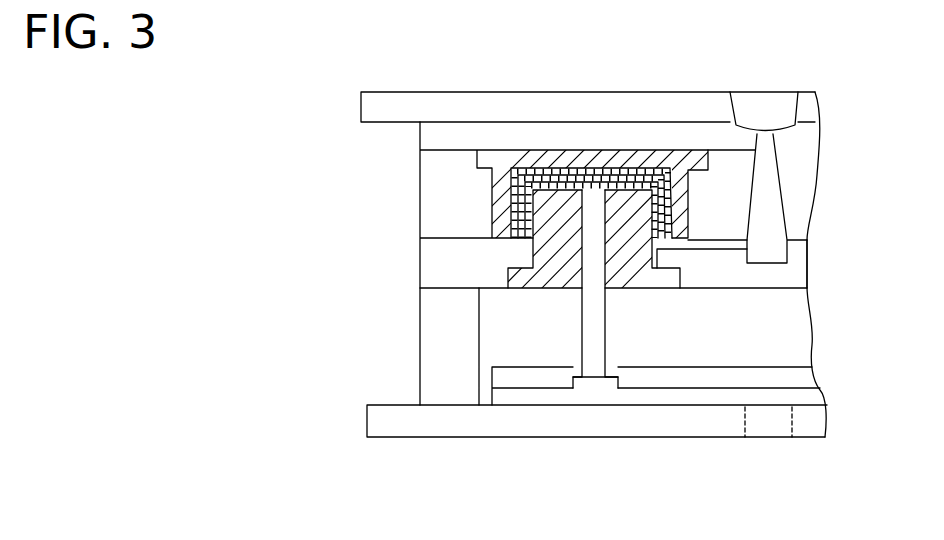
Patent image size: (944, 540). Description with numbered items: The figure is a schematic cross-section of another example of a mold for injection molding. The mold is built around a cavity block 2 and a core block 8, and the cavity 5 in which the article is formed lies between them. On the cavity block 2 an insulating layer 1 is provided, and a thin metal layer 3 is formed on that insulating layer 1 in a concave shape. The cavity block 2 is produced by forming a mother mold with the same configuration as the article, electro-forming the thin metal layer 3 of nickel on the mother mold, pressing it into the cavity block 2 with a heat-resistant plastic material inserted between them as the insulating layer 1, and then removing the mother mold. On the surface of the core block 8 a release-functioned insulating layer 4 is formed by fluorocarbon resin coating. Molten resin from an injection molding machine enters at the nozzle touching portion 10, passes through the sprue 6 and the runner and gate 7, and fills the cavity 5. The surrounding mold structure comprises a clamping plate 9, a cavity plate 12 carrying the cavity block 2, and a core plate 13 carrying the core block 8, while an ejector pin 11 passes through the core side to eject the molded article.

The insulating layer 1 is at (573, 168).
The cavity block 2 is at (613, 156).
The thin metal layer 3 is at (510, 210).
The release-functioned insulating layer 4 is at (517, 238).
The cavity 5 is at (510, 190).
The sprue 6 is at (773, 203).
The runner and gate 7 is at (665, 248).
The core block 8 is at (560, 258).
The clamping plate 9 is at (455, 113).
The nozzle touching portion 10 is at (767, 113).
The ejector pin 11 is at (597, 313).
The cavity plate 12 is at (430, 170).
The core plate 13 is at (435, 262).